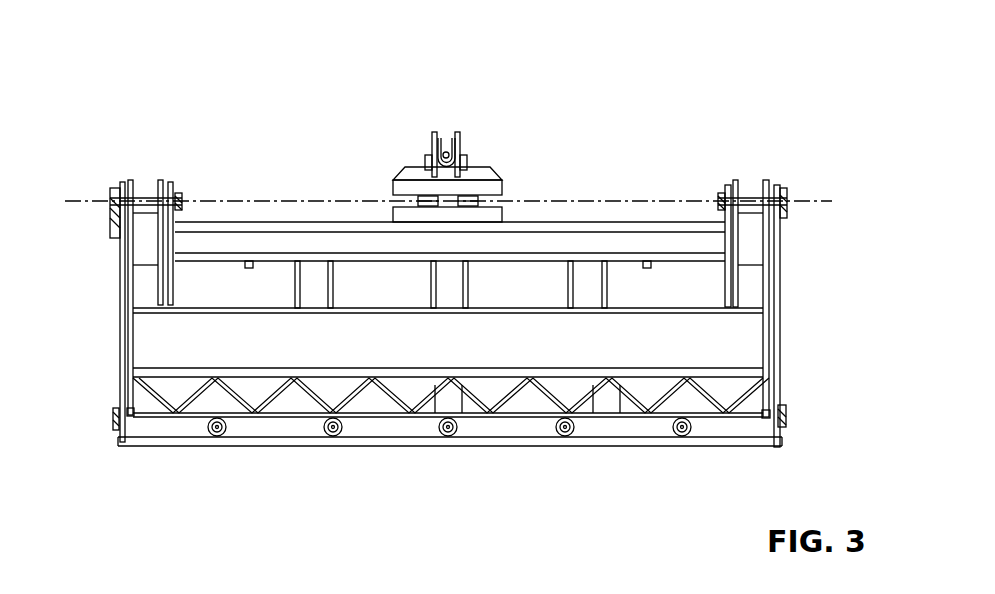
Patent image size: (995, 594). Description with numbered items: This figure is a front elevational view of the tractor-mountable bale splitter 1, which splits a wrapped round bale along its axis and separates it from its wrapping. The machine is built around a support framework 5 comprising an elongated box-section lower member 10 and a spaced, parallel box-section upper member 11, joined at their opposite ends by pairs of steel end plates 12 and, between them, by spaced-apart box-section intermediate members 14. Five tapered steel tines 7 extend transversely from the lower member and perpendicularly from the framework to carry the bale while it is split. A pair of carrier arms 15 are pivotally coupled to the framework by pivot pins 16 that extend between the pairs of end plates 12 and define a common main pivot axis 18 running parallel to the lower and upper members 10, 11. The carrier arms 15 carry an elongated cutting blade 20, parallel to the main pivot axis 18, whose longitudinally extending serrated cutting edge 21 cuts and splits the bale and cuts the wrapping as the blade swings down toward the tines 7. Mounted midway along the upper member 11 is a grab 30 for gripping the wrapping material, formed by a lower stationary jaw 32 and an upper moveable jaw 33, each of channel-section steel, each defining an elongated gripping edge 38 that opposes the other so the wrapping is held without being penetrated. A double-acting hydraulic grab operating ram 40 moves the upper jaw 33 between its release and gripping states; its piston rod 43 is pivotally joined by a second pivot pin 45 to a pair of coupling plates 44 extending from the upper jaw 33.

The bale splitter 1 is at (282, 497).
The support framework 5 is at (307, 233).
The tines 7 is at (220, 436).
The lower member 10 is at (292, 432).
The upper member 11 is at (263, 245).
The end plates 12 is at (118, 347).
The intermediate members 14 is at (332, 288).
The carrier arms 15 is at (123, 293).
The pivot pins 16 is at (182, 198).
The main pivot axis 18 is at (262, 202).
The cutting blade 20 is at (170, 390).
The cutting edge 21 is at (168, 403).
The grab 30 is at (490, 135).
The lower stationary jaw 32 is at (483, 215).
The upper moveable jaw 33 is at (502, 183).
The gripping edge 38 is at (503, 203).
The grab operating ram 40 is at (466, 165).
The piston rod 43 is at (428, 152).
The coupling plates 44 is at (440, 153).
The second pivot pin 45 is at (447, 152).